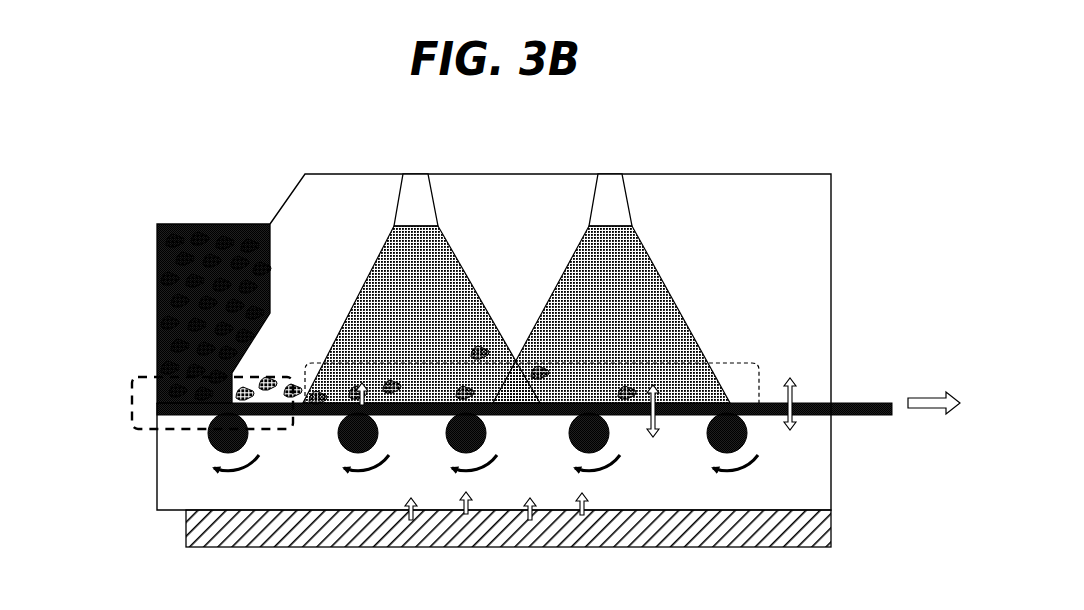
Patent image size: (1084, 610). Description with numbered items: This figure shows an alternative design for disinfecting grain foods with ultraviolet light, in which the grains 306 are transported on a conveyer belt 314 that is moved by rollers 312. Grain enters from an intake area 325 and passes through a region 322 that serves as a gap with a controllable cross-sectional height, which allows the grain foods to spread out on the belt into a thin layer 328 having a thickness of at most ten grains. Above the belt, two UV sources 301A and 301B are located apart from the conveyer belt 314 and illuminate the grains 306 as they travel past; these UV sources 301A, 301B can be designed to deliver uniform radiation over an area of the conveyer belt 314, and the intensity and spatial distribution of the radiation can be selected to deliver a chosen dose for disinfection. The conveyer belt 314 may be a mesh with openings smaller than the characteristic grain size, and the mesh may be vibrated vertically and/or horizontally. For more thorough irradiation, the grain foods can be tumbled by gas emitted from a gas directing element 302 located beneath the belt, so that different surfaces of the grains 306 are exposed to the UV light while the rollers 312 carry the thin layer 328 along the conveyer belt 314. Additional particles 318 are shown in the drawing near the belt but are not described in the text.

The UV source 301A is at (414, 198).
The UV source 301B is at (610, 198).
The gas directing element 302 is at (193, 527).
The grains 306 is at (500, 297).
The rollers 312 is at (338, 442).
The conveyer belt 314 is at (815, 416).
The particles on the substrate 318 is at (343, 347).
The region 322 is at (130, 423).
The intake area 325 is at (157, 258).
The thin layer 328 is at (745, 363).